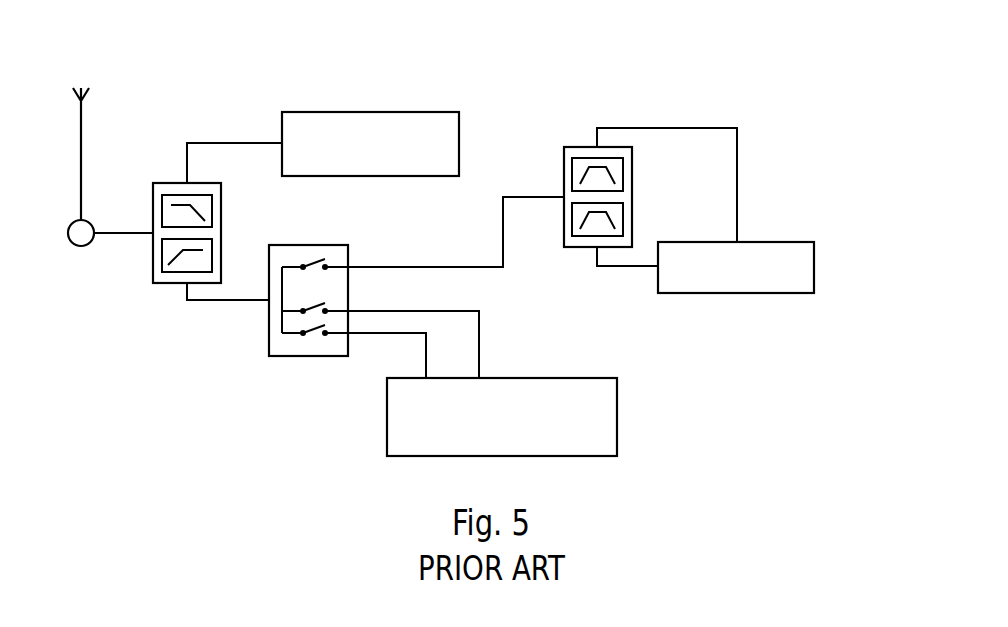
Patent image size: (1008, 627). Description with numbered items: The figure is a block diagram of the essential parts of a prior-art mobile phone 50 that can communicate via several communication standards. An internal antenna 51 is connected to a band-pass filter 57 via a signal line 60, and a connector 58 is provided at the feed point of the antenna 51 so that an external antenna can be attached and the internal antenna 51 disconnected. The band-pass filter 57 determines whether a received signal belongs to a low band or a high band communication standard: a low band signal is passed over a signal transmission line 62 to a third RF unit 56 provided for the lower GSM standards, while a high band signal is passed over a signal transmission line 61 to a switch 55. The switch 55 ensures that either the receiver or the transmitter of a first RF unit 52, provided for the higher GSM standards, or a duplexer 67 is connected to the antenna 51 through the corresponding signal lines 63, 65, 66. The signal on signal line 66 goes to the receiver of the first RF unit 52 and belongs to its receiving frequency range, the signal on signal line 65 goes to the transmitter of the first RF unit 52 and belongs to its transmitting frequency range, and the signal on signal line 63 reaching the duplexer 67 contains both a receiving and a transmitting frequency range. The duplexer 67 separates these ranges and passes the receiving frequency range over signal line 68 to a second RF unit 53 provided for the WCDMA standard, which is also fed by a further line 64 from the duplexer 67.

The mobile phone 50 is at (752, 458).
The antenna 51 is at (81, 121).
The first RF unit 52 is at (617, 410).
The second RF unit 53 is at (814, 268).
The switch 55 is at (312, 356).
The third RF unit 56 is at (459, 138).
The band-pass filter 57 is at (221, 222).
The connector 58 is at (80, 246).
The signal line 60 is at (117, 233).
The signal transmission line 61 is at (222, 300).
The signal transmission line 62 is at (223, 143).
The signal line 63 is at (418, 267).
The filter to receiver line 64 is at (622, 268).
The signal line 65 is at (479, 345).
The signal line 66 is at (426, 350).
The duplexer 67 is at (632, 187).
The signal line 68 is at (678, 128).